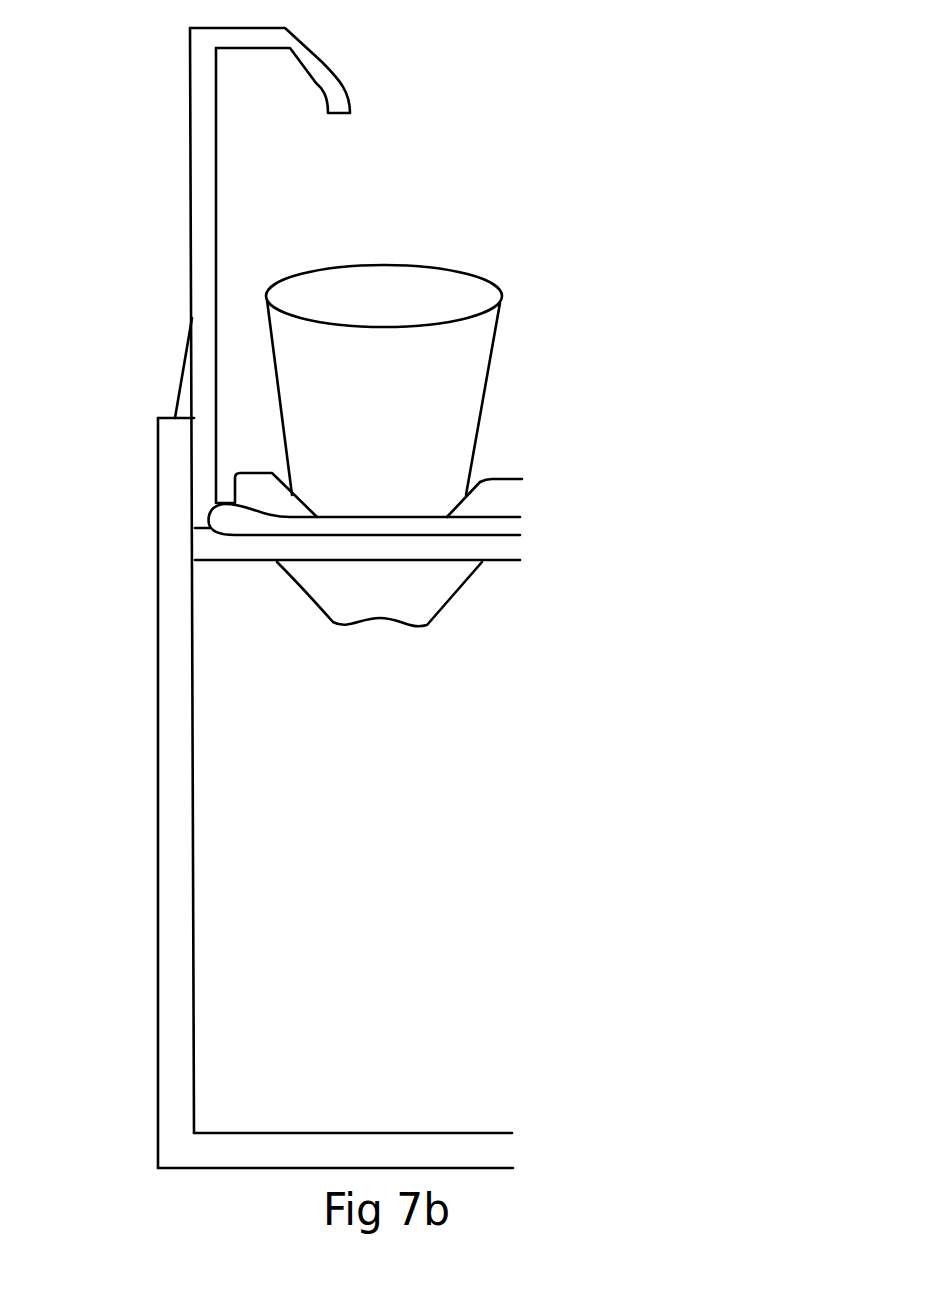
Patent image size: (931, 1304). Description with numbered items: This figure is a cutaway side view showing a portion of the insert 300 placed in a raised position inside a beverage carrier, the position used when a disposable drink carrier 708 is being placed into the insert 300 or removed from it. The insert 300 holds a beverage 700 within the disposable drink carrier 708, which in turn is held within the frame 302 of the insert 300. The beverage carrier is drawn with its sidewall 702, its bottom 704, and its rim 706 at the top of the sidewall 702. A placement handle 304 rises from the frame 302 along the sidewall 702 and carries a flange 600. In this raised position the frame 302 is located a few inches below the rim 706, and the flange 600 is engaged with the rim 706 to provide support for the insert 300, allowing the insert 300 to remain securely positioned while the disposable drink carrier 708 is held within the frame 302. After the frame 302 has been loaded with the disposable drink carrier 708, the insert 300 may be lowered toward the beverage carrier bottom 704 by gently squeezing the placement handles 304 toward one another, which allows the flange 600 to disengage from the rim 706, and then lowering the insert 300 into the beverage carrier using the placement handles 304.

The insert 300 is at (509, 196).
The frame 302 is at (258, 543).
The placement handle 304 is at (200, 102).
The flange 600 is at (186, 394).
The beverage 700 is at (488, 330).
The beverage carrier sidewall 702 is at (173, 717).
The beverage carrier bottom 704 is at (167, 1105).
The beverage carrier rim 706 is at (163, 415).
The disposable drink carrier 708 is at (500, 497).